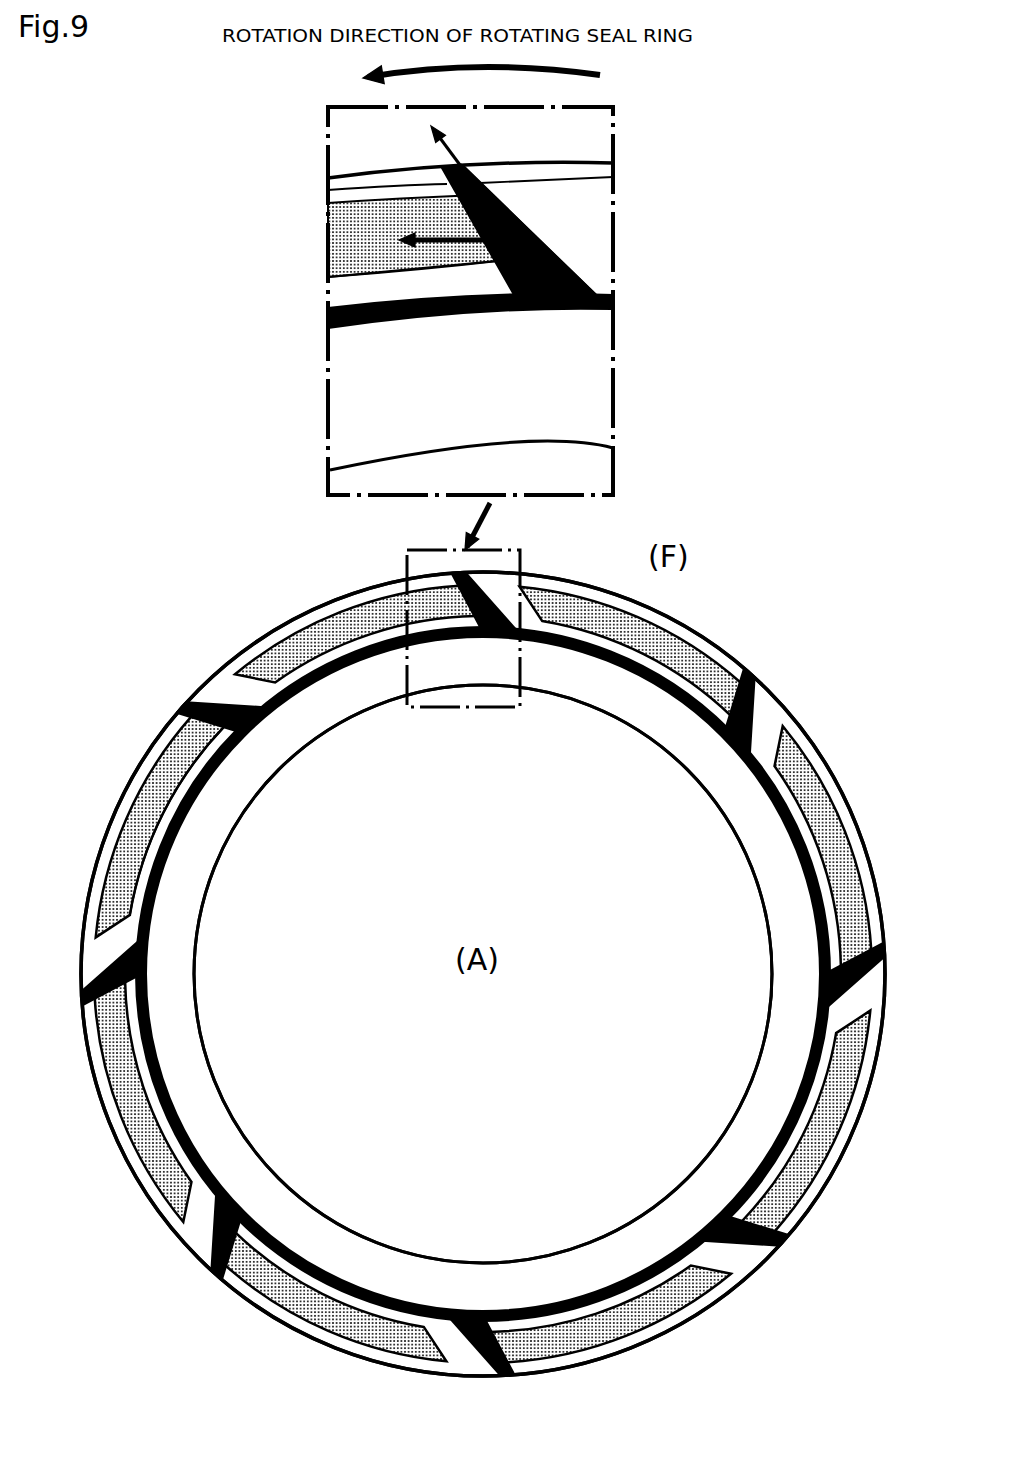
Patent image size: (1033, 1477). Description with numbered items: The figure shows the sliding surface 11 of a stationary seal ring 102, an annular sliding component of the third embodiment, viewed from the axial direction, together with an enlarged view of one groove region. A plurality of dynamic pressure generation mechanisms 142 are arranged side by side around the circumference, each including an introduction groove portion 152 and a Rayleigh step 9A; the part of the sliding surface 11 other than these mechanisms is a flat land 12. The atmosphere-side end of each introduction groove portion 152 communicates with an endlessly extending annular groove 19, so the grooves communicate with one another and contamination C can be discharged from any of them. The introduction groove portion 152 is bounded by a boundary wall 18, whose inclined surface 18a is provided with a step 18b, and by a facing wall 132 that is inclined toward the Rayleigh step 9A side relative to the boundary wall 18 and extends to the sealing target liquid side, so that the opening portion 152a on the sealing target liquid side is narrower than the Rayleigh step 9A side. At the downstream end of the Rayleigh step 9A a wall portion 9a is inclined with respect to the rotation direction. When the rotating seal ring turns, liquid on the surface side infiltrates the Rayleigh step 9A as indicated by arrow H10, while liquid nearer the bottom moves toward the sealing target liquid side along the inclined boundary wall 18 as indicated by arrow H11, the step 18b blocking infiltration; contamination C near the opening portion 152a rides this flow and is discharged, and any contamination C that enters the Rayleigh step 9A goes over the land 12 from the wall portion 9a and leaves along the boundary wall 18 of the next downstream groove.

The stationary seal ring 102 is at (735, 625).
The boundary wall 18 is at (180, 710).
The inclined surface 18a is at (370, 177).
The step 18b is at (543, 243).
The land 12 is at (763, 853).
The sliding surface 11 is at (731, 790).
The annular groove 19 is at (580, 648).
The wall portion 9a is at (110, 920).
The Rayleigh step 9A is at (150, 798).
The facing wall 132 is at (208, 701).
The introduction groove portion 152 is at (236, 713).
The opening portion 152a is at (174, 699).
The dynamic pressure generation mechanism 142 is at (363, 586).
The contamination C is at (437, 158).
The arrow H10 is at (435, 223).
The arrow H11 is at (518, 208).